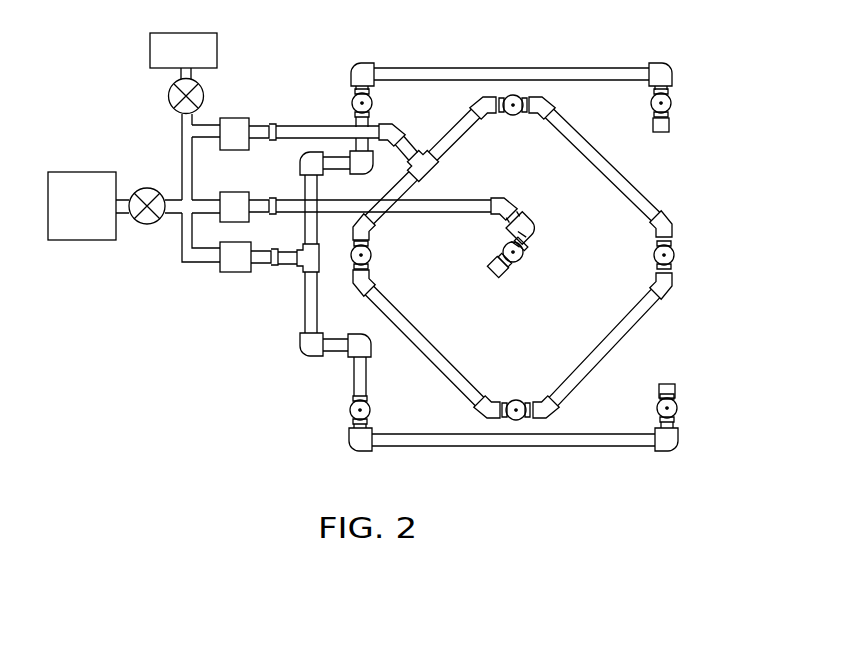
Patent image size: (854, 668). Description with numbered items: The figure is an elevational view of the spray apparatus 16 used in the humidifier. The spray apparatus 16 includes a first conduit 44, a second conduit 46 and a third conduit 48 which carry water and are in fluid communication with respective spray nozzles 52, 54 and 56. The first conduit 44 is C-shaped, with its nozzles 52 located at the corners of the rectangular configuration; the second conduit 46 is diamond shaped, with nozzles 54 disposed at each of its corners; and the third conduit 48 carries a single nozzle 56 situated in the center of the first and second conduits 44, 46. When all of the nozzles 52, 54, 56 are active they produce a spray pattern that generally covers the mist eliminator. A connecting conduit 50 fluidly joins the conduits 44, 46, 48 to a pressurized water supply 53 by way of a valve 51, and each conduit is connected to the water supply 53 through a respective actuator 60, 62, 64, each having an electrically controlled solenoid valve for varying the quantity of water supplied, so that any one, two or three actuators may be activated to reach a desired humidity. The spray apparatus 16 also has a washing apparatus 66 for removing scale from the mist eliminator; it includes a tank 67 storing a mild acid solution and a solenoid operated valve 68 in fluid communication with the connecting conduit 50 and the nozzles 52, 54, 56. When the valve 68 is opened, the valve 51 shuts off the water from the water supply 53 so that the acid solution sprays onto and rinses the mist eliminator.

The spray apparatus 16 is at (526, 228).
The first conduit 44 is at (537, 67).
The second conduit 46 is at (627, 333).
The third conduit 48 is at (467, 200).
The connecting conduit 50 is at (176, 168).
The valve 51 is at (148, 226).
The spray nozzles 52 is at (373, 103).
The pressurized water supply 53 is at (76, 172).
The spray nozzles 54 is at (515, 117).
The spray nozzle 56 is at (525, 262).
The actuator 60 is at (235, 273).
The actuator 62 is at (237, 118).
The actuator 64 is at (237, 192).
The washing apparatus 66 is at (177, 65).
The tank 67 is at (218, 48).
The solenoid operated valve 68 is at (168, 93).